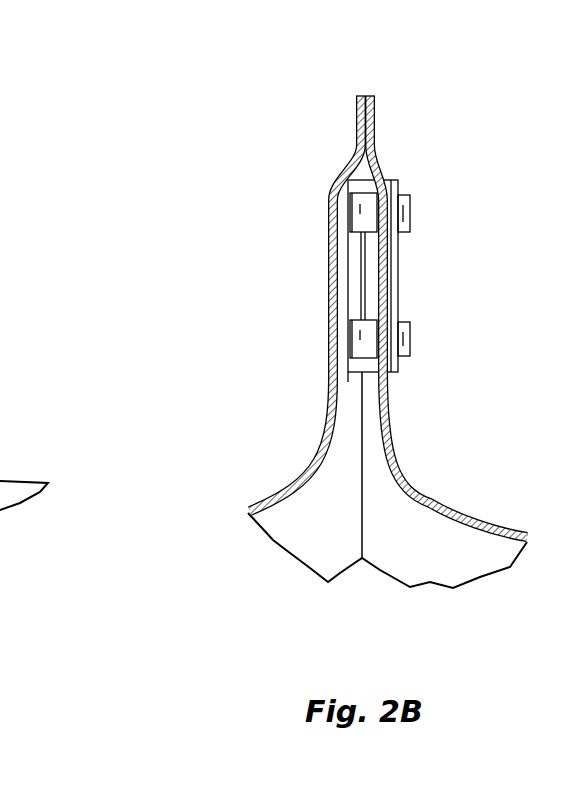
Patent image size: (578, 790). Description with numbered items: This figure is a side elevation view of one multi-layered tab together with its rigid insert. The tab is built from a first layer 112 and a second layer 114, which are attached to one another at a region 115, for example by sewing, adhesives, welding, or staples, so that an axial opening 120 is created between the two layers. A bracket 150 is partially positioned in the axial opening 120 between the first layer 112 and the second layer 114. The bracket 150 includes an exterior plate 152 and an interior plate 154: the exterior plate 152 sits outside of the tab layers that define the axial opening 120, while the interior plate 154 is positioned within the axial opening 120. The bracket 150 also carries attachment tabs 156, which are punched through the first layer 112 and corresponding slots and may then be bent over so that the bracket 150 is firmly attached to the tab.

The first layer 112 is at (383, 172).
The second layer 114 is at (337, 192).
The region 115 is at (385, 117).
The axial opening 120 is at (352, 388).
The bracket 150 is at (403, 267).
The exterior plate 152 is at (397, 302).
The interior plate 154 is at (353, 279).
The attachment tabs 156 is at (410, 212).